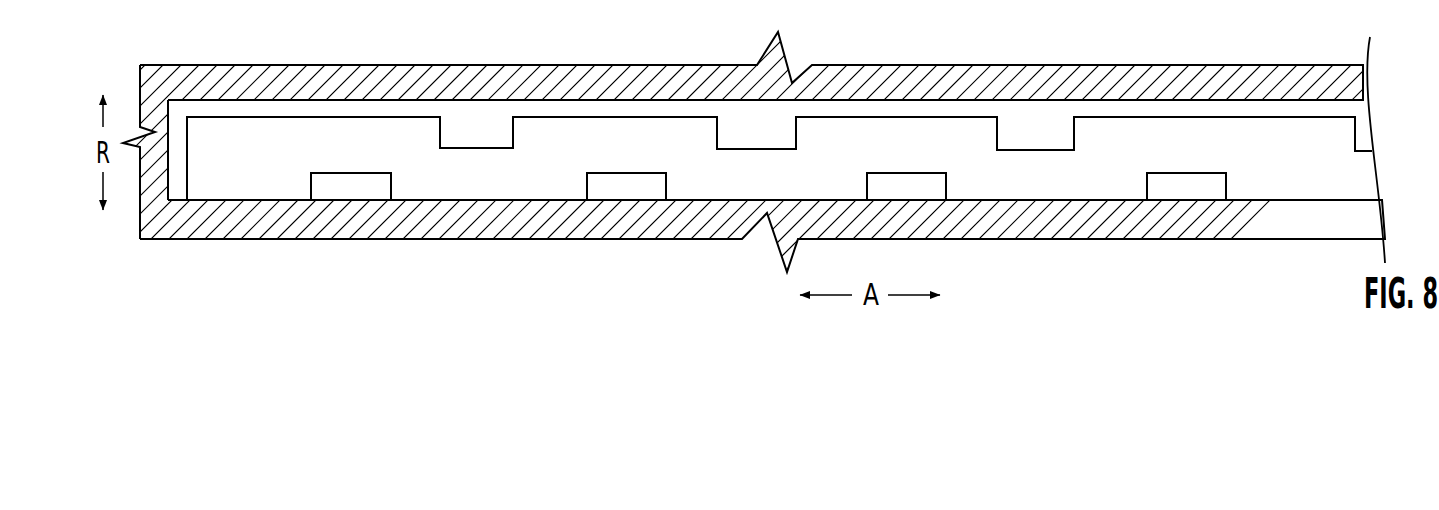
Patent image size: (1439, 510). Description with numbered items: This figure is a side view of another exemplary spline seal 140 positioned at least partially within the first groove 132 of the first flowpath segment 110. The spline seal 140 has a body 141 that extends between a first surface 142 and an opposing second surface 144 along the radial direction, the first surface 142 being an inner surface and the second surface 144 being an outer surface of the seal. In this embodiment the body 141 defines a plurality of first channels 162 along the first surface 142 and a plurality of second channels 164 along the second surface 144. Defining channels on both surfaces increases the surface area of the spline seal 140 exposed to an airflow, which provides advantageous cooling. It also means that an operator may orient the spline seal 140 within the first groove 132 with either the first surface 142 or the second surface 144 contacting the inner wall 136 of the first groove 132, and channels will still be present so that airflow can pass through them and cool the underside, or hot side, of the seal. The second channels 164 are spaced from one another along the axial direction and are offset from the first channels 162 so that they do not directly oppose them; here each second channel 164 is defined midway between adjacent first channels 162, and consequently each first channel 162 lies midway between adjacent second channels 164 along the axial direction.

The first flowpath segment 110 is at (1065, 227).
The first groove 132 is at (395, 110).
The first surface 142 is at (518, 207).
The second surface 144 is at (627, 115).
The second channels 164 is at (488, 125).
The first channels 162 is at (349, 192).
The inner wall 136 is at (253, 197).
The spline seal 140 is at (1267, 182).
The body 141 is at (1283, 152).